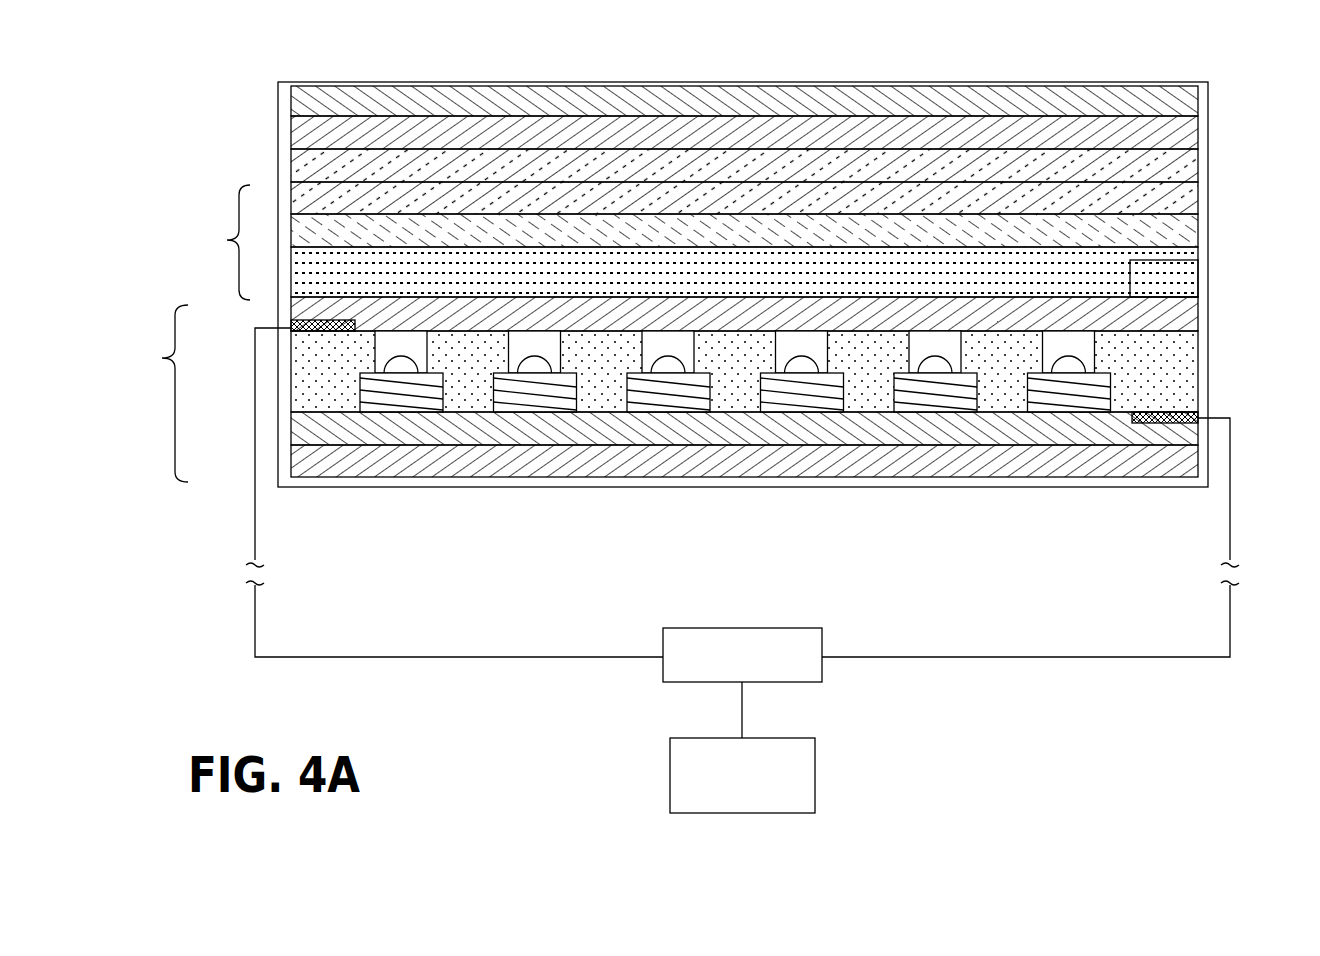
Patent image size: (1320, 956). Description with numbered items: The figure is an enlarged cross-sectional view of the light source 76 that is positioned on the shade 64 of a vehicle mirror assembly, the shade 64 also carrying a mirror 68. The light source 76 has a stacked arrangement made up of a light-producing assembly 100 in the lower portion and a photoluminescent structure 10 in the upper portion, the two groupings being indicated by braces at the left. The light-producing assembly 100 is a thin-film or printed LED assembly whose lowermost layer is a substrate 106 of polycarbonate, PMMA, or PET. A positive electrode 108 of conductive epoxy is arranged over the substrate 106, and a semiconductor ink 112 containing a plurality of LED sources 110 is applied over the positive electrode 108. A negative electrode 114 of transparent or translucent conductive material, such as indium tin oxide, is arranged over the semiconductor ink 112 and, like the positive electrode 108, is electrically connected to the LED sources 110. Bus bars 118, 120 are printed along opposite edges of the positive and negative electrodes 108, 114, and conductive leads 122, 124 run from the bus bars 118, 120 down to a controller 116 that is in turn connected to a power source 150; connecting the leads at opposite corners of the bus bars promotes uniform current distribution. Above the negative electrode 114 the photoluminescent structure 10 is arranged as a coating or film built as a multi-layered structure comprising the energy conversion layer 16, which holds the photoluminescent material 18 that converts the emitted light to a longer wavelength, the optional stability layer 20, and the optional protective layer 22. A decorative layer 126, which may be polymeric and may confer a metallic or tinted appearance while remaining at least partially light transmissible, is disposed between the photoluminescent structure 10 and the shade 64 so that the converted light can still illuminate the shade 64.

The light source 76 is at (165, 149).
The mirror 68 is at (291, 97).
The shade 64 is at (291, 138).
The decorative layer 126 is at (1198, 167).
The protective layer 22 is at (1198, 197).
The stability layer 20 is at (1198, 232).
The energy conversion layer 16 is at (1198, 267).
The photoluminescent material 18 is at (1165, 277).
The photoluminescent structure 10 is at (220, 242).
The negative electrode 114 is at (1198, 313).
The bus bar 120 is at (291, 325).
The semiconductor ink 112 is at (1198, 365).
The LED sources 110 is at (415, 393).
The bus bar 118 is at (1198, 413).
The positive electrode 108 is at (1198, 432).
The substrate 106 is at (1198, 465).
The light-producing assembly 100 is at (152, 393).
The conductive lead 124 is at (255, 527).
The conductive lead 122 is at (1232, 530).
The controller 116 is at (822, 672).
The power source 150 is at (815, 757).